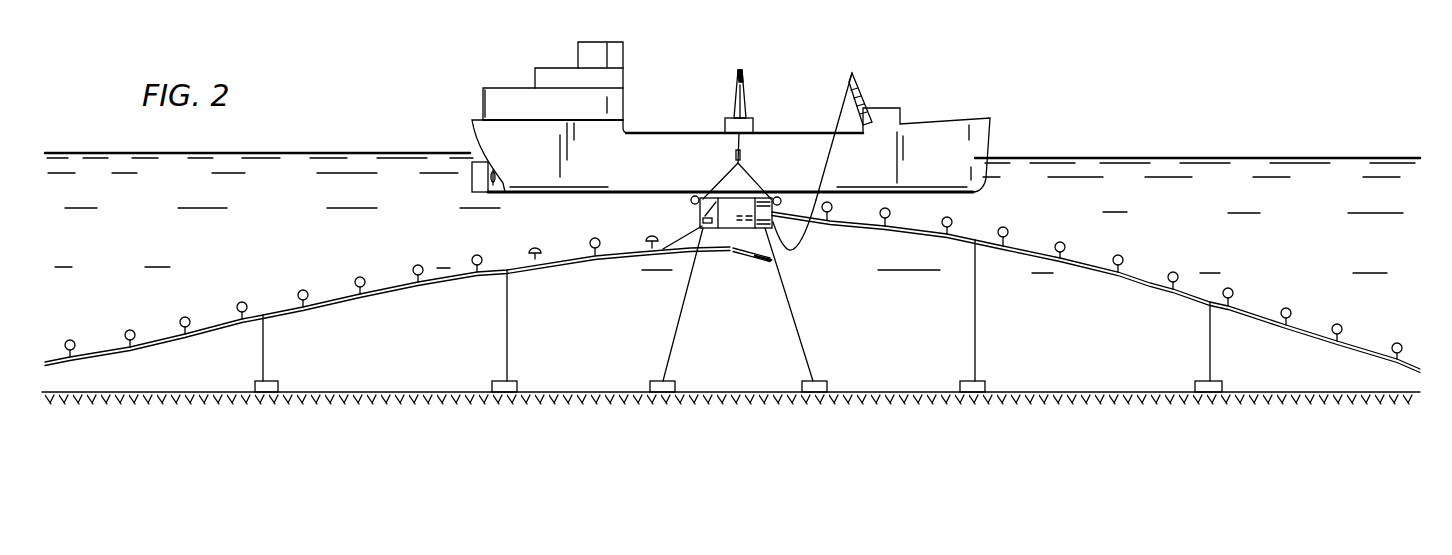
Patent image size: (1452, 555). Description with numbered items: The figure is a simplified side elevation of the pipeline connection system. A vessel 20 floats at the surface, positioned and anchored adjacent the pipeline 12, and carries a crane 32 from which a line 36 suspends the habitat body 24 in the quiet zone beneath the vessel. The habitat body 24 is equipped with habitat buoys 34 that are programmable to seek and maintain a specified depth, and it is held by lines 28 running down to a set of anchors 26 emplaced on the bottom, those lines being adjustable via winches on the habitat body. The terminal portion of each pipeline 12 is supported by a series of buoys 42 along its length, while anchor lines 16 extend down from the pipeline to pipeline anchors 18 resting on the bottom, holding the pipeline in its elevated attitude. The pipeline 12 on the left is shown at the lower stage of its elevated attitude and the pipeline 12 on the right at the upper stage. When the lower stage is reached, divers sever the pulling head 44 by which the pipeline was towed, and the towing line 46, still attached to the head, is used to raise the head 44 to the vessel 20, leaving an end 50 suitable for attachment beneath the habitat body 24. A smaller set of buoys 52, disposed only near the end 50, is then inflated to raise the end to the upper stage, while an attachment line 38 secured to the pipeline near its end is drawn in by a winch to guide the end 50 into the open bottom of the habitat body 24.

The pipeline 12 is at (340, 312).
The anchor lines 16 is at (262, 347).
The pipeline anchor 18 is at (278, 386).
The vessel 20 is at (626, 52).
The habitat body 24 is at (738, 201).
The anchors 26 is at (654, 382).
The lines 28 is at (682, 330).
The crane 32 is at (743, 73).
The habitat buoys 34 is at (691, 200).
The line 36 is at (742, 140).
The attachment line 38 is at (688, 229).
The buoys 42 is at (130, 329).
The pulling head 44 is at (762, 262).
The towing line 46 is at (843, 98).
The end 50 is at (729, 252).
The buoys 52 is at (535, 249).